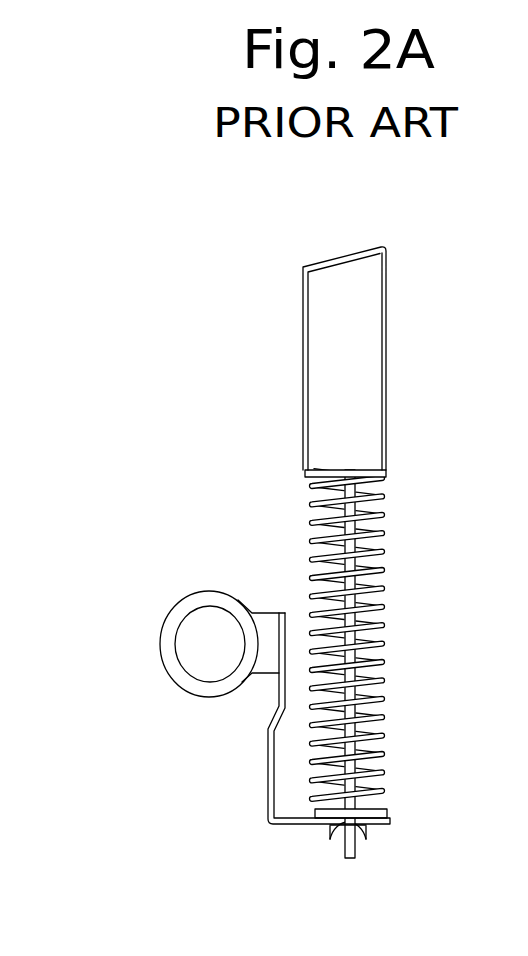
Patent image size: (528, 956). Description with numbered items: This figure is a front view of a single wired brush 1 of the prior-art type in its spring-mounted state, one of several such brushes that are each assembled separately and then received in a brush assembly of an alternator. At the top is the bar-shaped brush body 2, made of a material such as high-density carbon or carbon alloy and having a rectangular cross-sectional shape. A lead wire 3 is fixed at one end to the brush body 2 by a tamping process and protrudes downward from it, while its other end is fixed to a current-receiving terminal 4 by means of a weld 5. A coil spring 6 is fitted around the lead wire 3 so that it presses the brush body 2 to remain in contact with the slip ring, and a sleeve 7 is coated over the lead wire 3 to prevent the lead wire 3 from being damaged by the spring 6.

The wired brush 1 is at (336, 559).
The brush body 2 is at (370, 378).
The lead wire 3 is at (368, 841).
The terminal 4 is at (265, 756).
The weld 5 is at (330, 836).
The spring 6 is at (380, 652).
The sleeve 7 is at (350, 566).